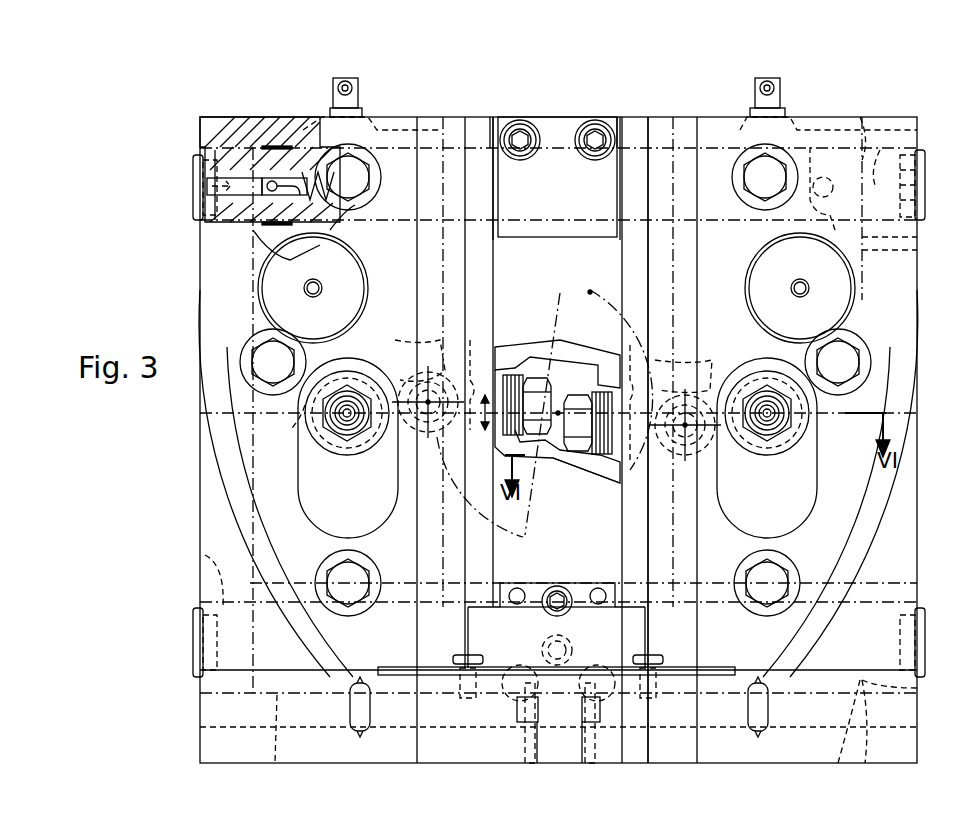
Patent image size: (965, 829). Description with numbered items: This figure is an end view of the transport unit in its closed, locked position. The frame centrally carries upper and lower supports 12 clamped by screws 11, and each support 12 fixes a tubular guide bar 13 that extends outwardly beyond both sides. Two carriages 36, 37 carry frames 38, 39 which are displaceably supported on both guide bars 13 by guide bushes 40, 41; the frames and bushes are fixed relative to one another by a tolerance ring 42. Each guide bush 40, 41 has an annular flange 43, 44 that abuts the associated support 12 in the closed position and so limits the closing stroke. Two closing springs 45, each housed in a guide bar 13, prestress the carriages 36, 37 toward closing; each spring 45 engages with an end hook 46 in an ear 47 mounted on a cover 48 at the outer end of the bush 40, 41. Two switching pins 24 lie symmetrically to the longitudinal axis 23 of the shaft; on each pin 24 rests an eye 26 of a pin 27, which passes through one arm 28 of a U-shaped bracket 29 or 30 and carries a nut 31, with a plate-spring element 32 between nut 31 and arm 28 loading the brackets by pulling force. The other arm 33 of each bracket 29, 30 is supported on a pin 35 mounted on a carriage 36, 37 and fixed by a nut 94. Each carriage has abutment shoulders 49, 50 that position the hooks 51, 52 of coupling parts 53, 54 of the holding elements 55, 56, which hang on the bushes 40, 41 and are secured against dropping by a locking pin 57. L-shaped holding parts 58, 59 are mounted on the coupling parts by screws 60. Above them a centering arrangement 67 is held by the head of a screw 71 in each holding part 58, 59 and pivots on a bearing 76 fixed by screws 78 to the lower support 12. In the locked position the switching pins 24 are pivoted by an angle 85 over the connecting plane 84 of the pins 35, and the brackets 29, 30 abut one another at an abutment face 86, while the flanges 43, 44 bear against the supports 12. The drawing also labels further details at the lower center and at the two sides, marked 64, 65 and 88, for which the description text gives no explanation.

The screws 11 is at (522, 125).
The supports 12 is at (570, 238).
The tubular guide bar 13 is at (220, 145).
The longitudinal axis 23 is at (565, 345).
The switching pins 24 is at (423, 370).
The eye 26 is at (400, 345).
The pin 27 is at (554, 386).
The arm 28 is at (498, 345).
The U-shaped bracket 29 is at (550, 335).
The U-shaped bracket 30 is at (585, 485).
The nut 31 is at (535, 378).
The spring element 32 is at (515, 375).
The arm 33 is at (300, 405).
The pin 35 is at (340, 420).
The carriage 36 is at (785, 108).
The carriage 37 is at (363, 105).
The frame 38 is at (917, 245).
The frame 39 is at (285, 145).
The guide bush 40 is at (218, 222).
The guide bush 41 is at (900, 140).
The tolerance ring 42 is at (285, 150).
The annular flange 43 is at (626, 128).
The annular flange 44 is at (488, 128).
The closing spring 45 is at (350, 215).
The end hook 46 is at (275, 182).
The ear 47 is at (250, 145).
The cover 48 is at (193, 165).
The abutment shoulder 49 is at (668, 135).
The abutment shoulder 50 is at (245, 225).
The hook 51 is at (648, 128).
The hook 52 is at (203, 120).
The coupling part 53 is at (622, 253).
The coupling part 54 is at (495, 270).
The holding element 55 is at (915, 295).
The holding element 56 is at (200, 292).
The locking pin 57 is at (322, 285).
The holding part 58 is at (888, 503).
The holding part 59 is at (246, 497).
The screws 60 is at (357, 172).
The lower block 64 is at (545, 735).
The roller 65 is at (360, 712).
The centering arrangement 67 is at (650, 628).
The screw 71 is at (462, 656).
The bearing 76 is at (540, 583).
The screws 78 is at (565, 588).
The connecting plane 84 is at (290, 430).
The angle 85 is at (482, 426).
The abutment face 86 is at (482, 340).
The disk 88 is at (270, 298).
The nut 94 is at (360, 440).